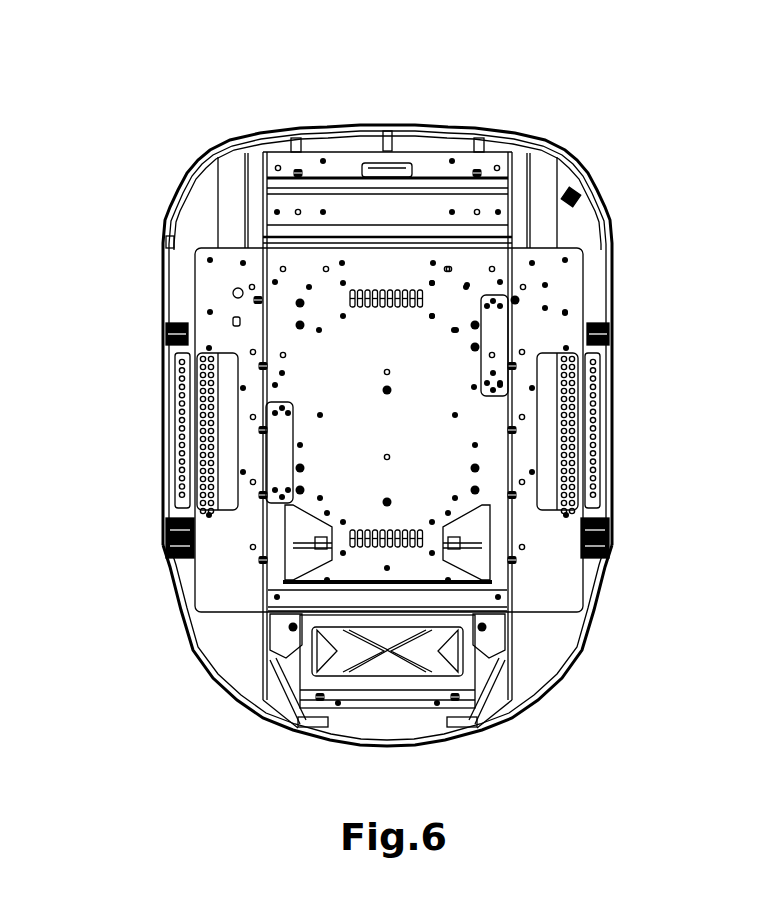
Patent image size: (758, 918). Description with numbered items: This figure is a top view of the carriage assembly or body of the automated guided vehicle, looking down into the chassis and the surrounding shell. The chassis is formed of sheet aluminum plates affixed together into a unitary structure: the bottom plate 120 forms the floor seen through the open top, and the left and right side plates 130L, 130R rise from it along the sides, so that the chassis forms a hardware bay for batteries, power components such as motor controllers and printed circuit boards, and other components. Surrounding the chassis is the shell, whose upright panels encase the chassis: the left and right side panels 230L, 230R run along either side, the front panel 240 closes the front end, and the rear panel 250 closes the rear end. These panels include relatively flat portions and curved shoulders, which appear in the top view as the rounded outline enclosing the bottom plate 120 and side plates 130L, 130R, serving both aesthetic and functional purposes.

The rear panel 250 is at (503, 140).
The bottom plate 120 is at (450, 310).
The left side plate 130L is at (517, 328).
The right side plate 130R is at (257, 447).
The left side panel 230L is at (606, 366).
The right side panel 230R is at (168, 364).
The front panel 240 is at (381, 742).